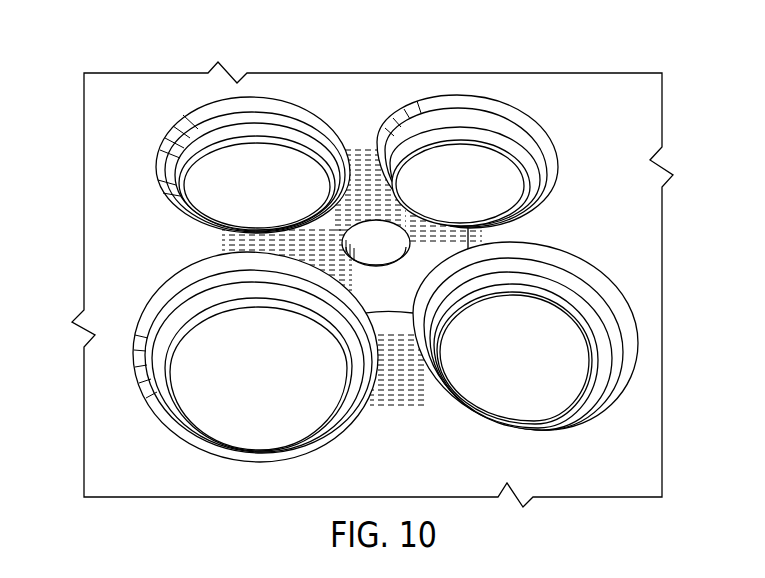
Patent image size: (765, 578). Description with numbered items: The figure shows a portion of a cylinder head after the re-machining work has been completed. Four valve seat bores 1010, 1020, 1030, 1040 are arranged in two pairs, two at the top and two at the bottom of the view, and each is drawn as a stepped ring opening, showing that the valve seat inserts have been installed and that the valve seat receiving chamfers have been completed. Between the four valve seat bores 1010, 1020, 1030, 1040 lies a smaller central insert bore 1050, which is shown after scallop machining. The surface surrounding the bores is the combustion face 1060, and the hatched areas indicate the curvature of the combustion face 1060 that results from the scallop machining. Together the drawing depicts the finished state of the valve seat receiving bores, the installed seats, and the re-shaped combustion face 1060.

The valve seat bore 1010 is at (602, 355).
The valve seat bore 1020 is at (163, 400).
The valve seat bore 1030 is at (293, 137).
The valve seat bore 1040 is at (510, 142).
The insert bore 1050 is at (398, 220).
The combustion face 1060 is at (370, 183).